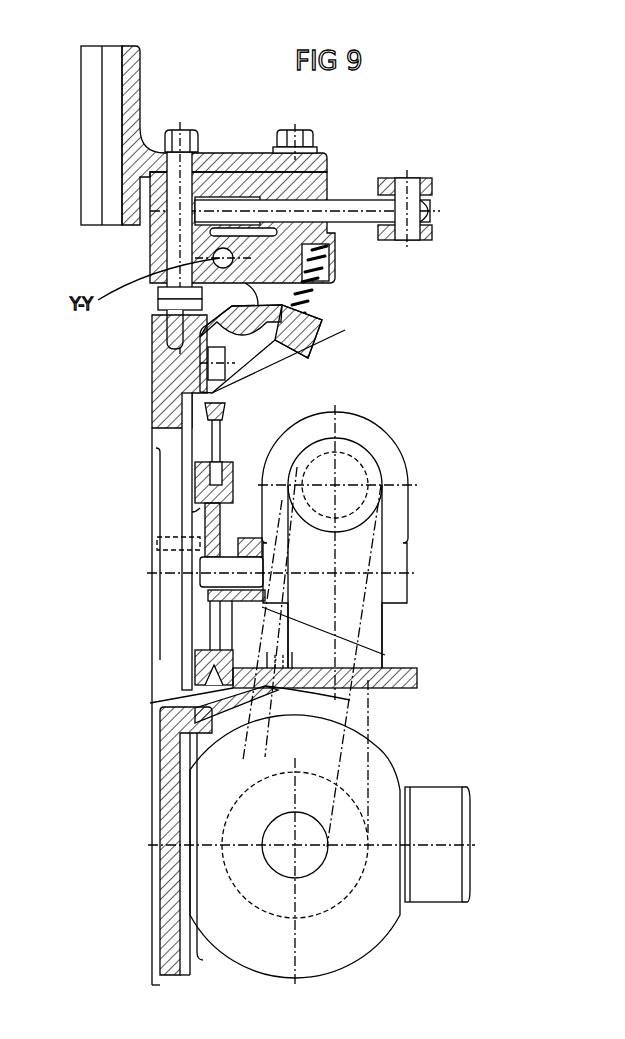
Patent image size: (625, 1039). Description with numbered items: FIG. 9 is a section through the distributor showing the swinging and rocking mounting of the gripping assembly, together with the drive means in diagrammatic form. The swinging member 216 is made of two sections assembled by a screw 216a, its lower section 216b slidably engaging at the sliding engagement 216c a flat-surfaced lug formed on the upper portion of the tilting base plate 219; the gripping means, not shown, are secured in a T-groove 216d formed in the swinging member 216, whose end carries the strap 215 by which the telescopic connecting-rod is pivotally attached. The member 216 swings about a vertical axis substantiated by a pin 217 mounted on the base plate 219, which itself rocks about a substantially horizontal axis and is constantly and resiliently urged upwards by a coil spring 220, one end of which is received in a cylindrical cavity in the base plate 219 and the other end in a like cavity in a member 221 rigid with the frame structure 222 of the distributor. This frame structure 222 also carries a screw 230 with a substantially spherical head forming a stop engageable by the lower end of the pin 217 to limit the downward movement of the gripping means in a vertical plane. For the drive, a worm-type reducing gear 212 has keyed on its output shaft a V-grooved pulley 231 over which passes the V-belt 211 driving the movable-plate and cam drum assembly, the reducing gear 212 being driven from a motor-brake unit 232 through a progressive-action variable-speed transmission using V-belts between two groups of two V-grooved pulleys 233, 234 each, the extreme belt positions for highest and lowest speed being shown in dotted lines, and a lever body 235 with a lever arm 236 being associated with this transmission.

The V-belt 211 is at (193, 685).
The worm-type reducing gear 212 is at (383, 630).
The strap 215 is at (432, 182).
The swinging member 216 is at (140, 98).
The screw 216a is at (306, 135).
The lower section 216b is at (323, 190).
The sliding engagement 216c is at (322, 222).
The T-groove 216d is at (92, 113).
The pin 217 is at (193, 146).
The base plate 219 is at (337, 245).
The coil spring 220 is at (314, 294).
The member 221 is at (322, 352).
The frame structure 222 is at (160, 413).
The screw 230 is at (163, 332).
The V-grooved pulley 231 is at (235, 468).
The motor-brake unit 232 is at (380, 797).
The V-grooved pulleys 233 is at (342, 900).
The V-grooved pulleys 234 is at (370, 475).
The lever body 235 is at (368, 772).
The lever arm 236 is at (357, 743).